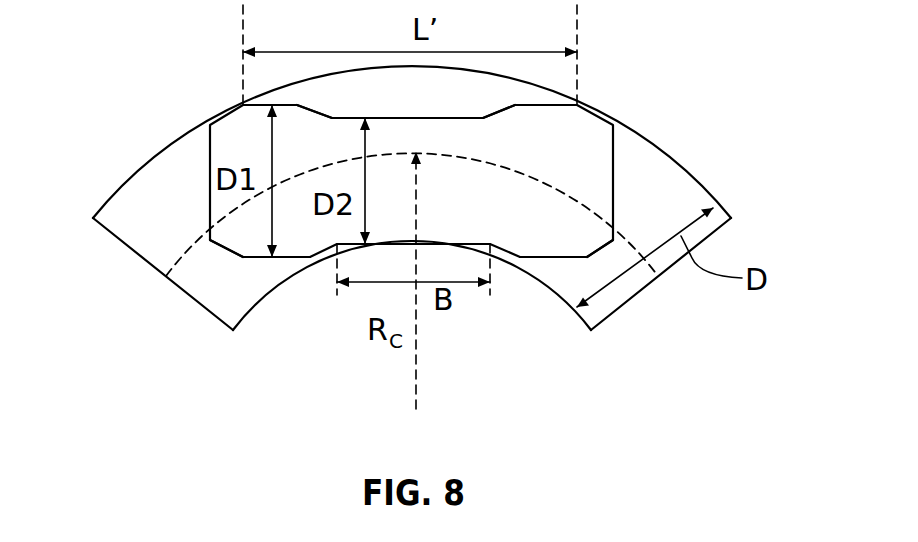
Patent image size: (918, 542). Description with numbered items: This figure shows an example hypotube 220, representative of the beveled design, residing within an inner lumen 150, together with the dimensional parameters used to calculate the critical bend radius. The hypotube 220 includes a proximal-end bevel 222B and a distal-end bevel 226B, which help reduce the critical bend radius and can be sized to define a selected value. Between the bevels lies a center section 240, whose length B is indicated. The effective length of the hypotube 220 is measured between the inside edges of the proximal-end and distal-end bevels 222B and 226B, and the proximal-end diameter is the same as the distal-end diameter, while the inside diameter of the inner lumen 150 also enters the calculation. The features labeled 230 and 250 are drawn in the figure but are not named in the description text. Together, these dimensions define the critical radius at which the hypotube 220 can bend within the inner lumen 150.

The inner lumen 150 is at (190, 131).
The hypotube 220 is at (613, 148).
The center section 240 is at (385, 118).
The proximal-end bevel 222B is at (223, 250).
The slot bottom wall 230 is at (261, 258).
The slot bottom wall portion 250 is at (553, 258).
The distal-end bevel 226B is at (601, 251).